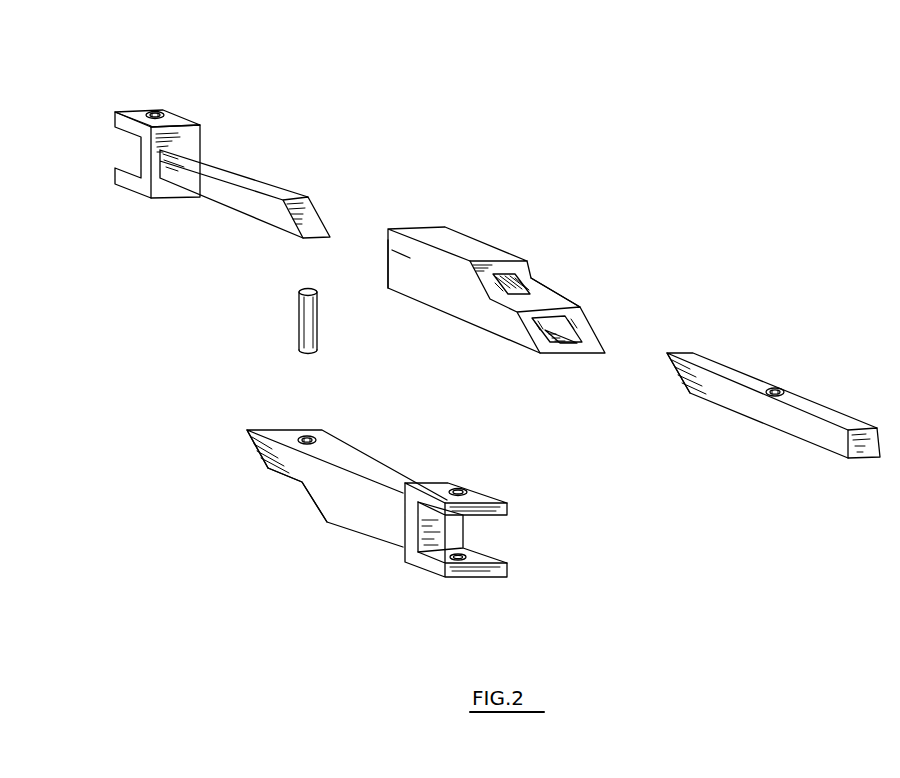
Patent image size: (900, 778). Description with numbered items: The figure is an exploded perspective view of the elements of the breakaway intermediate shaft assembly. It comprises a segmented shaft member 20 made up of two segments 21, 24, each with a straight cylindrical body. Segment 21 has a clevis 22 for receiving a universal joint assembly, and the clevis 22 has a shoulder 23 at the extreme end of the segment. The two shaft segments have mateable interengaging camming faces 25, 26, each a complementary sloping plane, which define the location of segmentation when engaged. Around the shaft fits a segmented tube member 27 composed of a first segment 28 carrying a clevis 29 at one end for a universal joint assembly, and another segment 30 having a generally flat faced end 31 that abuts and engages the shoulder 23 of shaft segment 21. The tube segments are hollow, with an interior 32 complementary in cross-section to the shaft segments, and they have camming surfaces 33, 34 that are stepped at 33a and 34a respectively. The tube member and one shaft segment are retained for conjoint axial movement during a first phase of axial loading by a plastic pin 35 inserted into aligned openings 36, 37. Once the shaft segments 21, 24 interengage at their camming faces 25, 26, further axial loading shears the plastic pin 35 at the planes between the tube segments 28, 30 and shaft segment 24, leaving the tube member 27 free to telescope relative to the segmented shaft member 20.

The segmented shaft member 20 is at (312, 175).
The shaft segment 21 is at (268, 184).
The clevis 22 is at (139, 113).
The shoulder 23 is at (191, 127).
The shaft segment 24 is at (750, 383).
The camming face 25 is at (313, 221).
The camming face 26 is at (675, 372).
The segmented tube member 27 is at (430, 316).
The first tube segment 28 is at (303, 511).
The clevis 29 is at (481, 496).
The tube segment 30 is at (522, 265).
The flat faced end 31 is at (388, 248).
The interior 32 is at (518, 278).
The camming surface 33 is at (587, 333).
The step 33a is at (560, 303).
The camming surface 34 is at (260, 450).
The step 34a is at (283, 477).
The plastic pin 35 is at (318, 328).
The opening 36 is at (782, 388).
The opening 37 is at (318, 435).